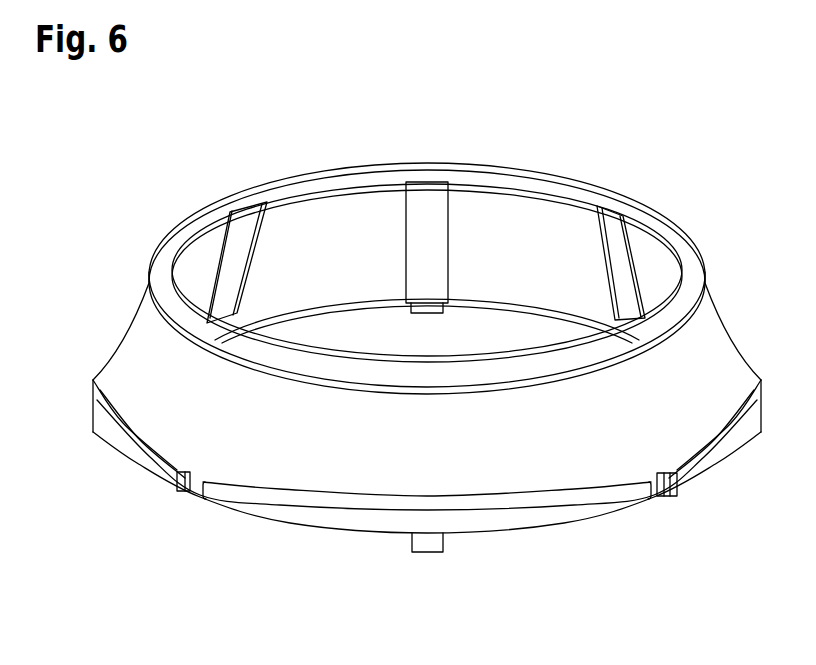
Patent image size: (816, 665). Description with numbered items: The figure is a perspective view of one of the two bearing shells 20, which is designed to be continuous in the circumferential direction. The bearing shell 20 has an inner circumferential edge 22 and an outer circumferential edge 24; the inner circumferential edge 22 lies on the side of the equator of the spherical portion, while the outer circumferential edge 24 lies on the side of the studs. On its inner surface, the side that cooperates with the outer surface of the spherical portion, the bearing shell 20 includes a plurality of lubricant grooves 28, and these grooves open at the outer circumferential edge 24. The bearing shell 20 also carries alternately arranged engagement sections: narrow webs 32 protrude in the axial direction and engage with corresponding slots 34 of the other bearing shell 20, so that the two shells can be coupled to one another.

The bearing shell 20 is at (143, 182).
The inner circumferential edge 22 is at (292, 527).
The outer circumferential edge 24 is at (665, 214).
The lubricant grooves 28 is at (428, 207).
The webs 32 is at (424, 550).
The slots 34 is at (193, 497).